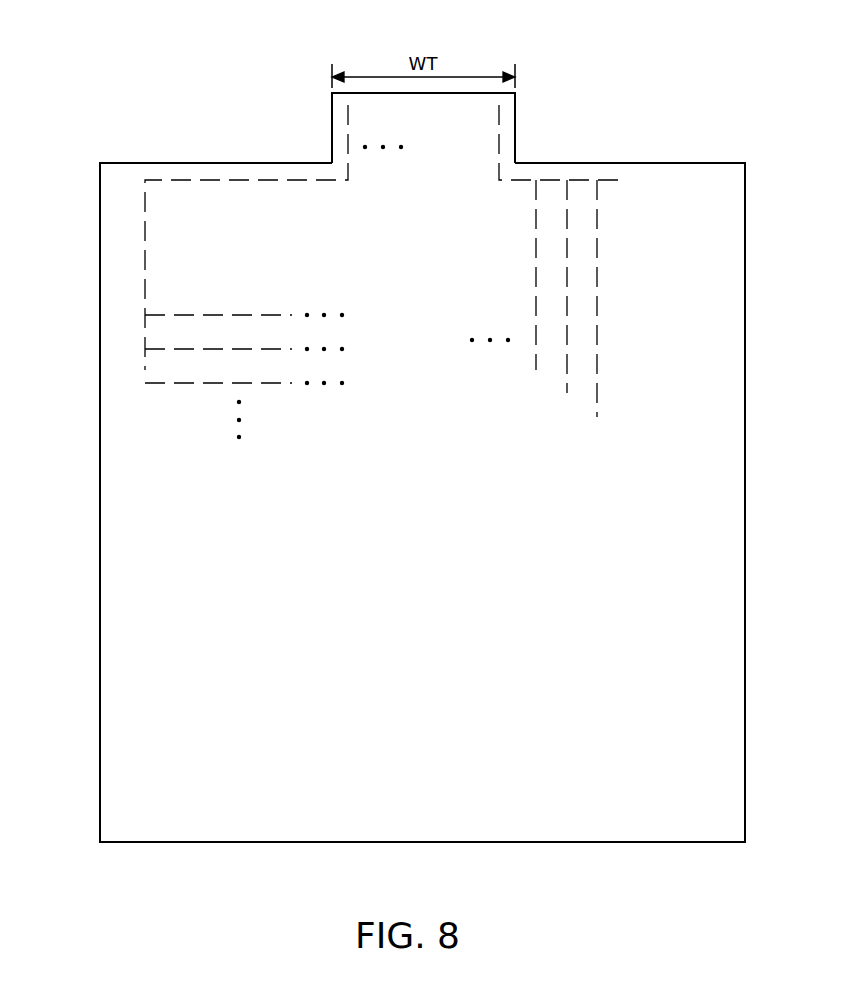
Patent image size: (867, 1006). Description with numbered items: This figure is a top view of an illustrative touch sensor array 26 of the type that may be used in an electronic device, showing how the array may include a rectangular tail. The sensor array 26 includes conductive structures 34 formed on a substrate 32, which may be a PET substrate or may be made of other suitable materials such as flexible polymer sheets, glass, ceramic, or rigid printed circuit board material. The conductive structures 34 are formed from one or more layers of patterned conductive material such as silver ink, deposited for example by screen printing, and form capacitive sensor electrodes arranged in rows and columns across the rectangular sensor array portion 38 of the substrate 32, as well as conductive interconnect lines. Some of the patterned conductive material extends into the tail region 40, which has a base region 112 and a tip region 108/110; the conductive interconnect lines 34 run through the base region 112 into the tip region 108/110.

The sensor array 26 is at (211, 80).
The substrate 32 is at (745, 352).
The conductive structures 34 is at (499, 138).
The sensor array portion 38 is at (78, 164).
The tail region 40 is at (322, 97).
The tip region 108 is at (518, 93).
The tip region 110 is at (563, 111).
The base region 112 is at (518, 131).